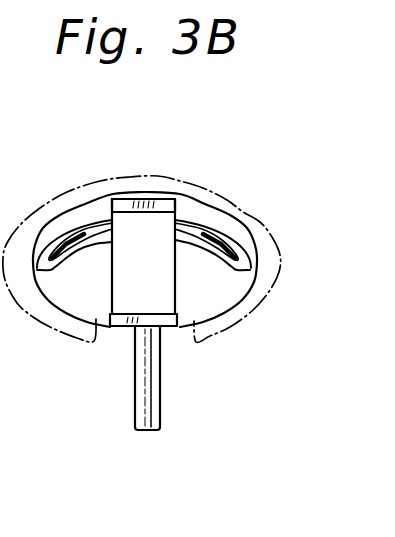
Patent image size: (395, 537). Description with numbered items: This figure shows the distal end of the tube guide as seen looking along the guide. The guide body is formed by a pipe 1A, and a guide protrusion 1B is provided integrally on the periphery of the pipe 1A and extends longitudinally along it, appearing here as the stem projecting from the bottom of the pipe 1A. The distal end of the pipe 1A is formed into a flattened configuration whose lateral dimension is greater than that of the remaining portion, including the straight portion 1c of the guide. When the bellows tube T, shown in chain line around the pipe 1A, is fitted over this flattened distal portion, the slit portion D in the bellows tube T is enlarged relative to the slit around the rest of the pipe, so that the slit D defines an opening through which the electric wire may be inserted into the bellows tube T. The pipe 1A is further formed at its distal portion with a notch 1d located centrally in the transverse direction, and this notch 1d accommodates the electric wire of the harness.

The pipe 1A is at (228, 217).
The guide protrusion 1B is at (152, 400).
The straight portion 1c is at (169, 278).
The notch 1d is at (153, 199).
The bellows tube T is at (72, 182).
The slit portion D is at (125, 328).